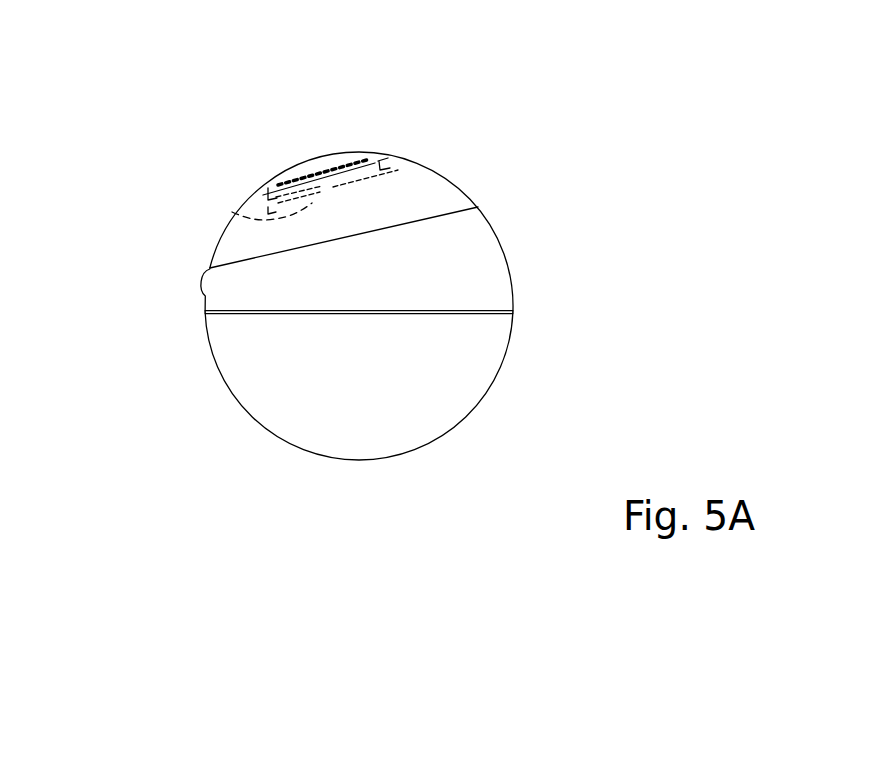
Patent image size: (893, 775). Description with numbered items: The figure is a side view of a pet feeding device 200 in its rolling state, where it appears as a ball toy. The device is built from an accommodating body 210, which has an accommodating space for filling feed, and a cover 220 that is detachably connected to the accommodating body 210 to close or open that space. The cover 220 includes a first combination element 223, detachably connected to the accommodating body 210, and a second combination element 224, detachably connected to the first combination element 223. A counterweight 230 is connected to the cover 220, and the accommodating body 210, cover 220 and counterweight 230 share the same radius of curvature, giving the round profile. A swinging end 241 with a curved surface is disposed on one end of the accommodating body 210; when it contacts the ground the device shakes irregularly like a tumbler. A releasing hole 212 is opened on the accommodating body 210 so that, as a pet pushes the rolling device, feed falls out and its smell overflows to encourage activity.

The pet feeding device 200 is at (113, 46).
The accommodating body 210 is at (508, 265).
The releasing hole 212 is at (208, 280).
The cover 220 is at (482, 83).
The first combination element 223 is at (427, 165).
The second combination element 224 is at (360, 151).
The counterweight 230 is at (232, 211).
The swinging end 241 is at (358, 460).